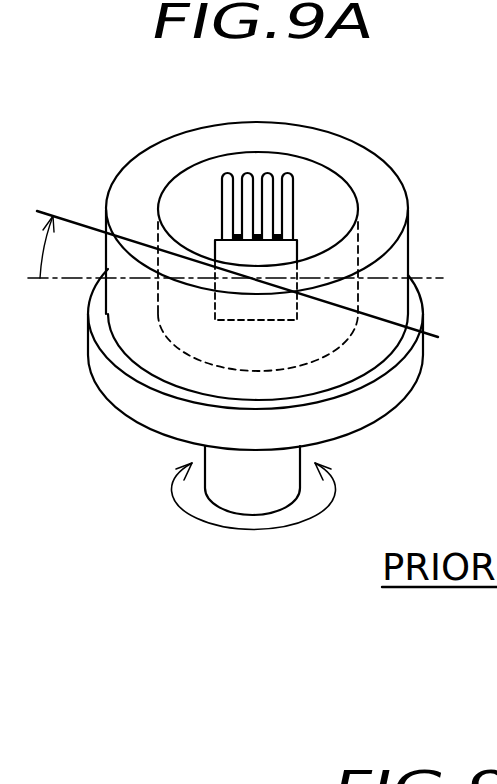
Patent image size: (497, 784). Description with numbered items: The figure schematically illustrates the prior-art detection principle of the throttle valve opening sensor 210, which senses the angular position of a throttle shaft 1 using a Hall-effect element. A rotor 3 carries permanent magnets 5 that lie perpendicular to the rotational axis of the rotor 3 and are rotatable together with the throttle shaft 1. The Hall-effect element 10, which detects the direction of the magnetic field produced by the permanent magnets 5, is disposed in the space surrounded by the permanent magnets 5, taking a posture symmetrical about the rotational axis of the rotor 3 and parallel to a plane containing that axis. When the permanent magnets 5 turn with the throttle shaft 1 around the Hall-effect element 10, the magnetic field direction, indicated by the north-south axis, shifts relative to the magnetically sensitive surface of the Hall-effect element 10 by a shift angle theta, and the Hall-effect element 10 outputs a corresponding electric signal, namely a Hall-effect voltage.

The throttle shaft 1 is at (234, 503).
The rotor 3 is at (372, 418).
The permanent magnets 5 is at (365, 158).
The Hall-effect element 10 is at (303, 248).
The throttle valve opening sensor 210 is at (233, 333).